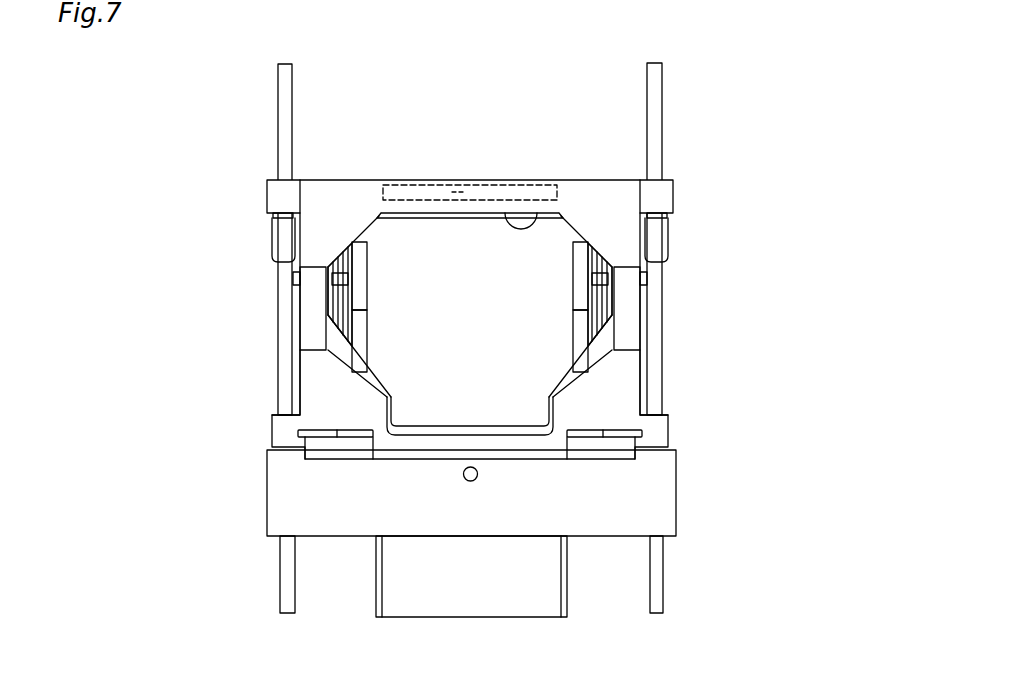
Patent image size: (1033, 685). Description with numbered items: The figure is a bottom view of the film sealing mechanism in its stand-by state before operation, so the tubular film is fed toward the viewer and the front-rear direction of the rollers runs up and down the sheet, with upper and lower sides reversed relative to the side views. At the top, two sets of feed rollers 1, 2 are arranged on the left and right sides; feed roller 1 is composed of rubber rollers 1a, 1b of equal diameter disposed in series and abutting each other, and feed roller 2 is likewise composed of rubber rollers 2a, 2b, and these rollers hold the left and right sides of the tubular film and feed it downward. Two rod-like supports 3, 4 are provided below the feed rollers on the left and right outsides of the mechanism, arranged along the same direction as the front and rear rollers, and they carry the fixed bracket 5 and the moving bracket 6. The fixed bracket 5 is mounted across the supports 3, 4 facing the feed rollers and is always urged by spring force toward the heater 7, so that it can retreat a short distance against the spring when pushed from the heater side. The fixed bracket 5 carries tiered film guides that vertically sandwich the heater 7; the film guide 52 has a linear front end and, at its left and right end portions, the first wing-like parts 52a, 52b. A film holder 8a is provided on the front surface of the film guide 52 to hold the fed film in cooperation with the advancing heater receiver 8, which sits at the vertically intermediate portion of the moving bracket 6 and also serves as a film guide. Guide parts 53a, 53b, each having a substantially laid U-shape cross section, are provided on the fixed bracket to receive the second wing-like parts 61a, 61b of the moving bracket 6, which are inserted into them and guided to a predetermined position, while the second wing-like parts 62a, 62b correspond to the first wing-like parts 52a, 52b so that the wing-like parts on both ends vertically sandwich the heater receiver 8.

The feed roller 1 is at (553, 307).
The rubber roller 1a is at (575, 342).
The rubber roller 1b is at (577, 270).
The feed roller 2 is at (388, 307).
The rubber roller 2a is at (365, 343).
The rubber roller 2b is at (363, 272).
The rod-like support 3 is at (662, 100).
The rod-like support 4 is at (277, 102).
The fixed bracket 5 is at (430, 178).
The moving bracket 6 is at (513, 514).
The heater 7 is at (458, 201).
The heater receiver 8 is at (472, 425).
The film holder 8a is at (539, 212).
The film guide 52 is at (492, 188).
The first wing-like part 52a is at (623, 230).
The first wing-like part 52b is at (317, 232).
The guide part 53a is at (632, 303).
The guide part 53b is at (308, 303).
The second wing-like part 61a is at (603, 342).
The second wing-like part 61b is at (337, 342).
The second wing-like part 62a is at (623, 392).
The second wing-like part 62b is at (317, 392).